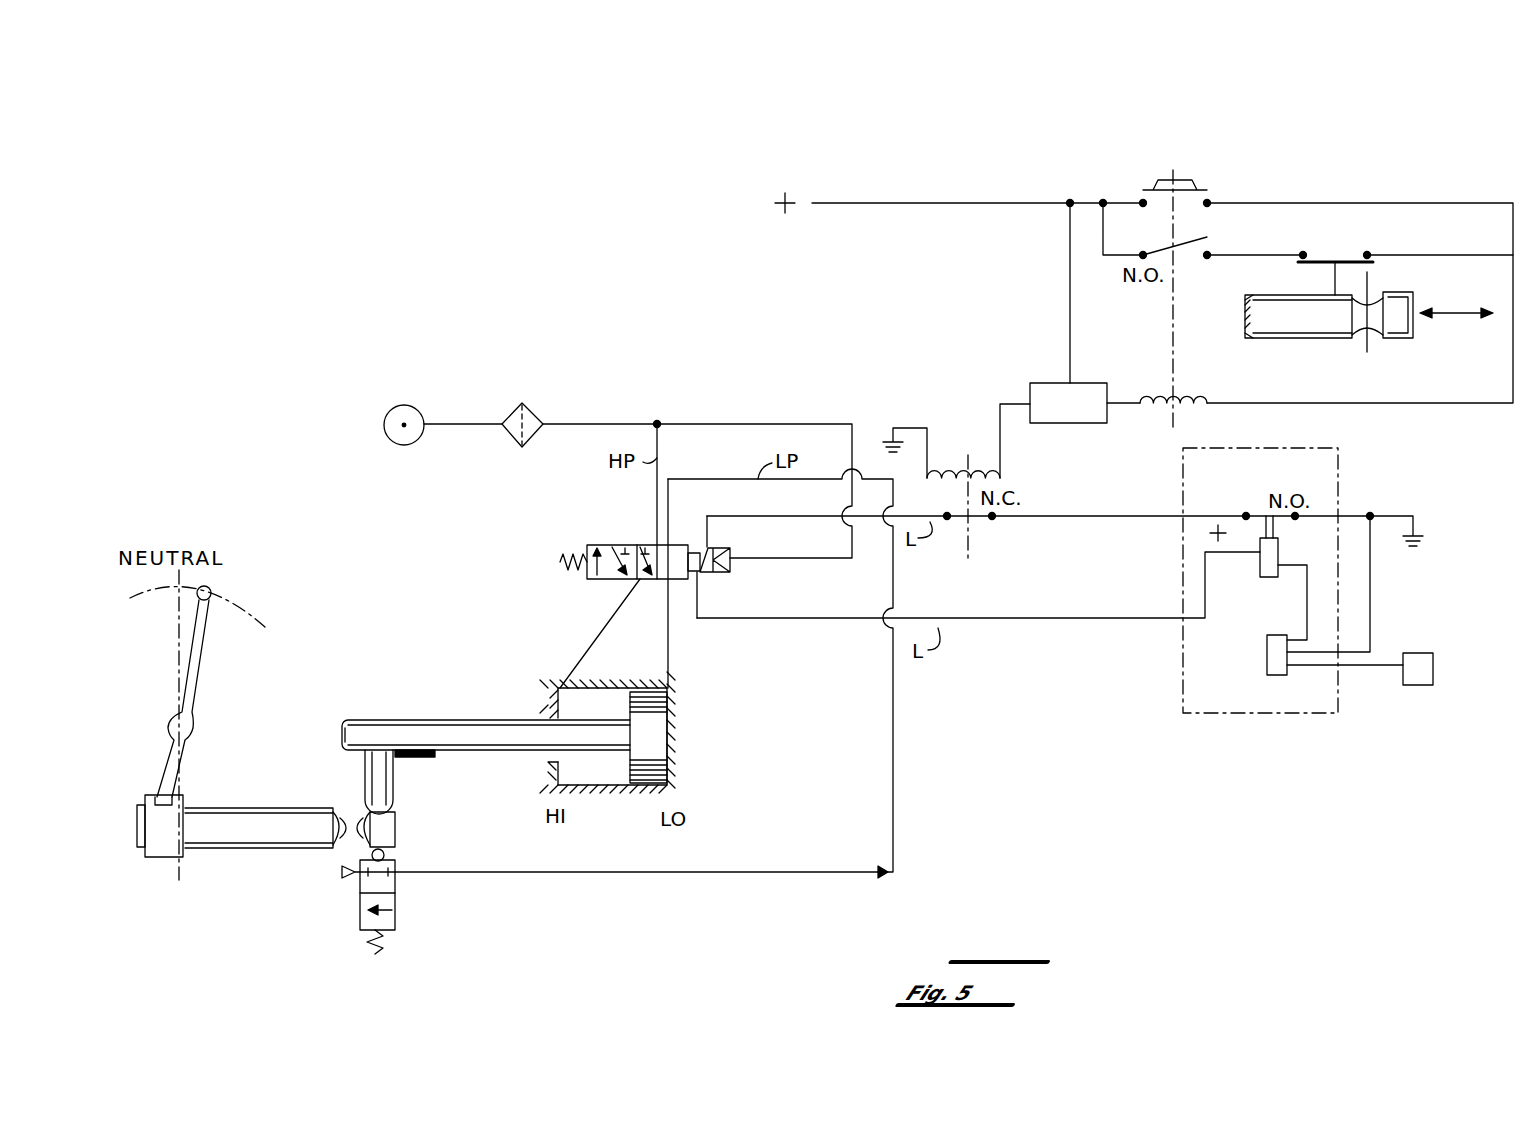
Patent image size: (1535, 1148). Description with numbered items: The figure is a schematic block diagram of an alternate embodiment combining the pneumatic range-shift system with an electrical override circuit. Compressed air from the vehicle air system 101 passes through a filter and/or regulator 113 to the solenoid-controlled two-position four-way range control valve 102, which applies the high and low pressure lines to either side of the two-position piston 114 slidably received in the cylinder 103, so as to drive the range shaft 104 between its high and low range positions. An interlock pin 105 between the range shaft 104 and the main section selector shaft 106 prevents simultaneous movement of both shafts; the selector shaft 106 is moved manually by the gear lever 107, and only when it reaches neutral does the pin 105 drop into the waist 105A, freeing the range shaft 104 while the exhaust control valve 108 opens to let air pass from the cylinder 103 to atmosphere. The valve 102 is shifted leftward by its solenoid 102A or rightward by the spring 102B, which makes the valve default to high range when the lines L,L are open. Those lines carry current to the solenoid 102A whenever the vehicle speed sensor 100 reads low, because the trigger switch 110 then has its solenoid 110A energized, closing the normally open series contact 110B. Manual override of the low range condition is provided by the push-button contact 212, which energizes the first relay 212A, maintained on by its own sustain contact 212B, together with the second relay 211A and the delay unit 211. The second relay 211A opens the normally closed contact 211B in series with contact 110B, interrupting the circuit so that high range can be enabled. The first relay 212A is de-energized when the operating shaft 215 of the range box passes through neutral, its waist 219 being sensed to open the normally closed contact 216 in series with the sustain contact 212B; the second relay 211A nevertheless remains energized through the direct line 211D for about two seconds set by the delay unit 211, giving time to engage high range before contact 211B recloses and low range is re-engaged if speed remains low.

The vehicle speed sensor 100 is at (1418, 685).
The vehicle air system 101 is at (403, 405).
The range control valve 102 is at (603, 545).
The solenoid 102A is at (730, 575).
The spring 102B is at (560, 560).
The cylinder 103 is at (598, 788).
The range shaft 104 is at (443, 718).
The interlock pin 105 is at (365, 778).
The waist 105A is at (350, 842).
The selector shaft 106 is at (247, 850).
The gear lever 107 is at (216, 592).
The exhaust control valve 108 is at (397, 918).
The trigger switch 110 is at (1238, 713).
The solenoid 110A is at (1300, 595).
The normally open contact 110B is at (1258, 577).
The filter and/or regulator 113 is at (530, 410).
The piston 114 is at (655, 727).
The delay unit 211 is at (1082, 423).
The second relay 211A is at (948, 455).
The normally closed contact 211B is at (945, 528).
The direct line 211D is at (1070, 258).
The push-button contact 212 is at (1165, 178).
The first relay 212A is at (1200, 410).
The sustain contact 212B is at (1180, 258).
The operating shaft 215 is at (1315, 338).
The normally closed contact 216 is at (1328, 262).
The waist 219 is at (1375, 300).